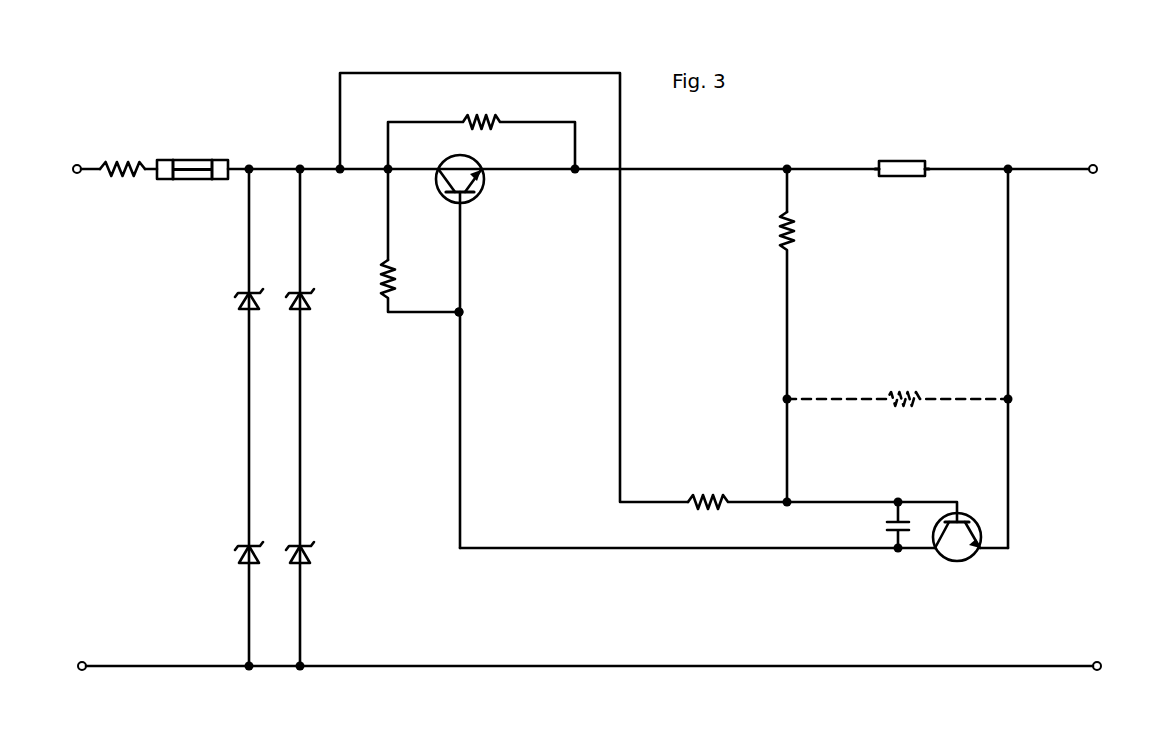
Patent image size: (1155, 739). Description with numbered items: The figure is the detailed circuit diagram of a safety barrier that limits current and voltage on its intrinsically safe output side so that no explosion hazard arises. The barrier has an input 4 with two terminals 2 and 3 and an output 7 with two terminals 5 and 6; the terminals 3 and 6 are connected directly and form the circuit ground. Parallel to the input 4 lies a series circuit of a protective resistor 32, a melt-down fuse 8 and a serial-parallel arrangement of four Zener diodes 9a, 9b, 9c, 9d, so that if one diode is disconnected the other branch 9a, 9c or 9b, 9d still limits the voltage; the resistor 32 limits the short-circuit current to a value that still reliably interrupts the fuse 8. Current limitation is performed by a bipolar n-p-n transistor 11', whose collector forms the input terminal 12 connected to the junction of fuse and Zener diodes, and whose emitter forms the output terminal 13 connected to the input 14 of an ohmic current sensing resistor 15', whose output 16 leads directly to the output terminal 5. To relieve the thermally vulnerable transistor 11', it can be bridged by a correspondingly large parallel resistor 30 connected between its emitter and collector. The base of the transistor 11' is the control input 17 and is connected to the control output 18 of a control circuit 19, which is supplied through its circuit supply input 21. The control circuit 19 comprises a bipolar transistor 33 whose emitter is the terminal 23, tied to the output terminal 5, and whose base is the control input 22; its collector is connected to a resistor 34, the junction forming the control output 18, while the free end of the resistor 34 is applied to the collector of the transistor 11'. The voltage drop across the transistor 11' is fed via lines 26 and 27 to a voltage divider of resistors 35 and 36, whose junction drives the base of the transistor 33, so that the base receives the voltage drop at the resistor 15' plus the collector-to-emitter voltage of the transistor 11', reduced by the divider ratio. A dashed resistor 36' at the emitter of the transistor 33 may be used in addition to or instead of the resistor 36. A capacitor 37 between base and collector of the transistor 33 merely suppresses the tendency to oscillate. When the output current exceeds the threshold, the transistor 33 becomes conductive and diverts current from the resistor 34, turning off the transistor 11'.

The input terminal 2 is at (77, 174).
The input terminal 3 is at (82, 661).
The input 4 is at (145, 351).
The output terminal 5 is at (1093, 174).
The output terminal 6 is at (1097, 661).
The output 7 is at (1060, 338).
The melt-down fuse 8 is at (197, 160).
The Zener diode 9a is at (248, 292).
The Zener diode 9b is at (302, 292).
The Zener diode 9c is at (248, 545).
The Zener diode 9d is at (302, 545).
The bipolar n-p-n transistor 11' is at (487, 187).
The input terminal 12 is at (437, 168).
The output terminal 13 is at (495, 168).
The input of current sensing element 14 is at (879, 162).
The ohmic resistor 15' is at (902, 142).
The output of current sensing element 16 is at (927, 162).
The control input 17 is at (458, 205).
The control output 18 is at (462, 312).
The control circuit 19 is at (718, 559).
The circuit supply input 21 is at (388, 195).
The control input terminal 22 is at (955, 519).
The input terminal 23 is at (985, 558).
The line 26 is at (590, 73).
The line 27 is at (785, 192).
The resistor 30 is at (468, 118).
The protective resistor 32 is at (128, 160).
The bipolar transistor 33 is at (940, 562).
The resistor 34 is at (386, 279).
The resistor 35 is at (708, 494).
The resistor 36 is at (818, 357).
The resistor 36' is at (897, 369).
The capacitor 37 is at (892, 552).